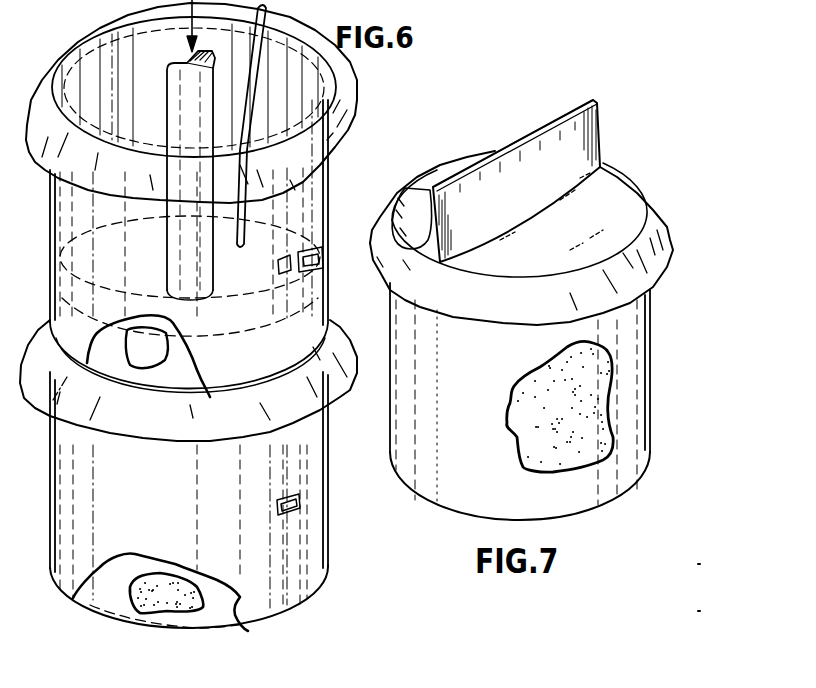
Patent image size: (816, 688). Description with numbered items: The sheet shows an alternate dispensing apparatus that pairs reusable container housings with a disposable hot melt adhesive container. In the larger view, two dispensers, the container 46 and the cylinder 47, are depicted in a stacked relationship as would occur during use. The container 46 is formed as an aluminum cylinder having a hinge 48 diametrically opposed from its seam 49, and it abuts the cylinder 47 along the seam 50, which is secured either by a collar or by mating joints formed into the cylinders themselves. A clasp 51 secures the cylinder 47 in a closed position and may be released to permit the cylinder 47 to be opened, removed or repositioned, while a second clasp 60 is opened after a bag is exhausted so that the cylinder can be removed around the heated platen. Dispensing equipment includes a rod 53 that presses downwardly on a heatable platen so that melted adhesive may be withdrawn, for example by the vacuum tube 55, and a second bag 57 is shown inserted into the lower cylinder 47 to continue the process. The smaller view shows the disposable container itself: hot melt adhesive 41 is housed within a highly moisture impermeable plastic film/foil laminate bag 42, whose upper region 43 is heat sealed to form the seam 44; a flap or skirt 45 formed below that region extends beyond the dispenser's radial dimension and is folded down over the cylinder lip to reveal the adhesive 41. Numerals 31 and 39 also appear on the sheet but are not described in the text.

In FIG. 7, the housing 31 is at (672, 0).
In FIG. 7, the cap 39 is at (498, 0).
In FIG. 7, the hot melt adhesive 41 is at (530, 407).
In FIG. 7, the plastic film/foil laminate bag 42 is at (648, 368).
In FIG. 7, the upper region 43 is at (594, 127).
In FIG. 7, the seam 44 is at (520, 140).
In FIG. 7, the flap or skirt 45 is at (673, 245).
In FIG. 6, the container 46 is at (328, 184).
In FIG. 6, the dispenser cylinder 47 is at (324, 520).
In FIG. 6, the hinge 48 is at (117, 77).
In FIG. 6, the seam 49 is at (196, 297).
In FIG. 6, the seam 50 is at (327, 325).
In FIG. 6, the clasp 51 is at (277, 512).
In FIG. 6, the rod 53 is at (213, 66).
In FIG. 6, the vacuum tube 55 is at (270, 12).
In FIG. 6, the second bag 57 is at (211, 583).
In FIG. 6, the clasp 60 is at (315, 237).